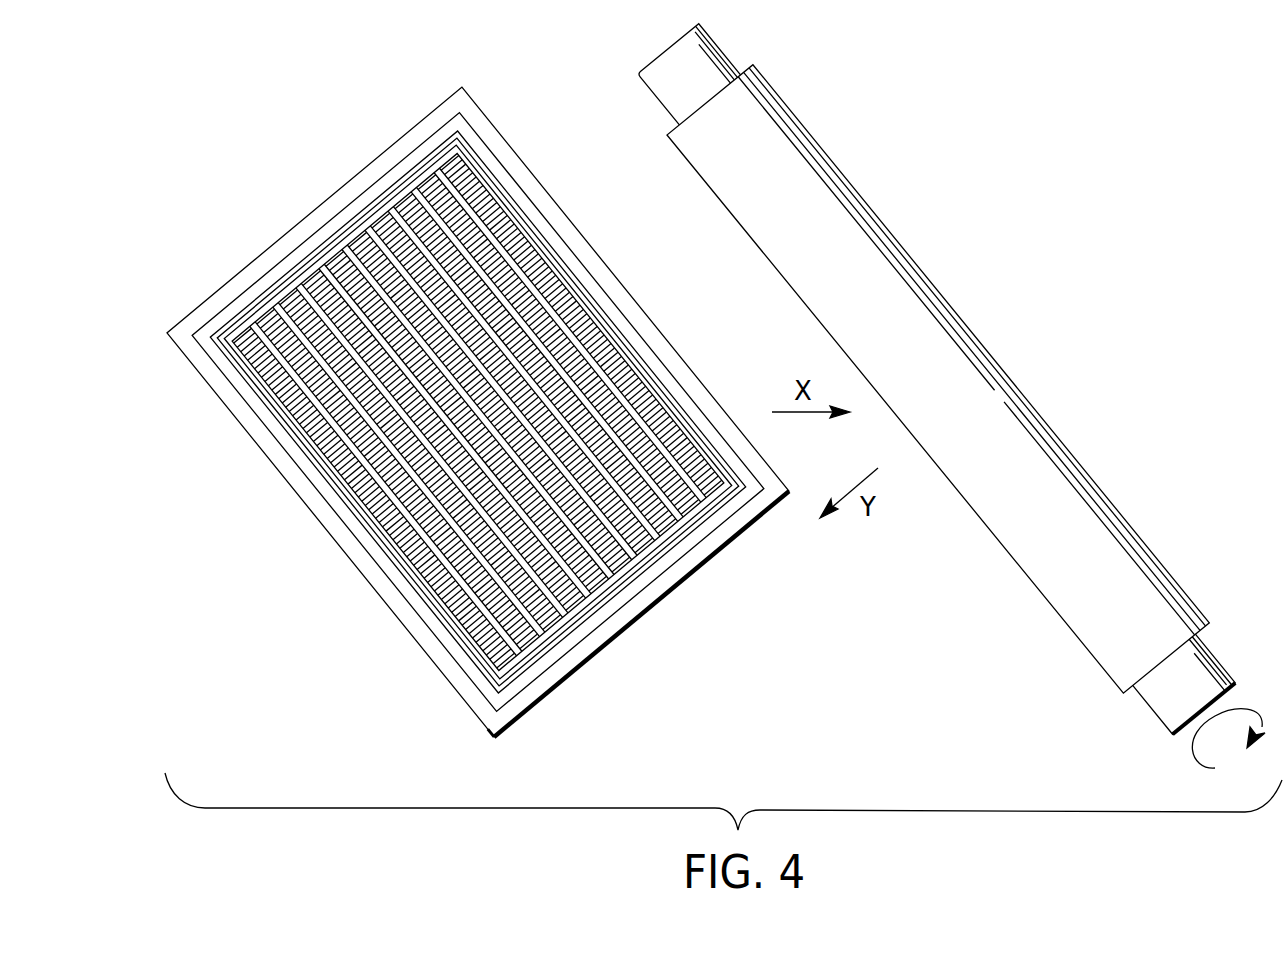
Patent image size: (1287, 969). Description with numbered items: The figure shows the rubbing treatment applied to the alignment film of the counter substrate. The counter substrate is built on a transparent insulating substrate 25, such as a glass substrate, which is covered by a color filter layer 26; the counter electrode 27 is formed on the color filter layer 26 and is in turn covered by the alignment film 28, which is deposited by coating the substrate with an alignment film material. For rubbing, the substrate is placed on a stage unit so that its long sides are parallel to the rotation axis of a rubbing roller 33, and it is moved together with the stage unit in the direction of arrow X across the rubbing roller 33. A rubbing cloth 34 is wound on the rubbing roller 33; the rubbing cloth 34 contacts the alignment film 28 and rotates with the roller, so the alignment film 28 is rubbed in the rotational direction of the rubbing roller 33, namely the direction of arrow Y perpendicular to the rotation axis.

The transparent insulating substrate 25 is at (295, 483).
The color filter layer 26 is at (492, 176).
The counter electrode 27 is at (272, 268).
The alignment film 28 is at (373, 198).
The rubbing roller 33 is at (1098, 470).
The rubbing cloth 34 is at (958, 316).